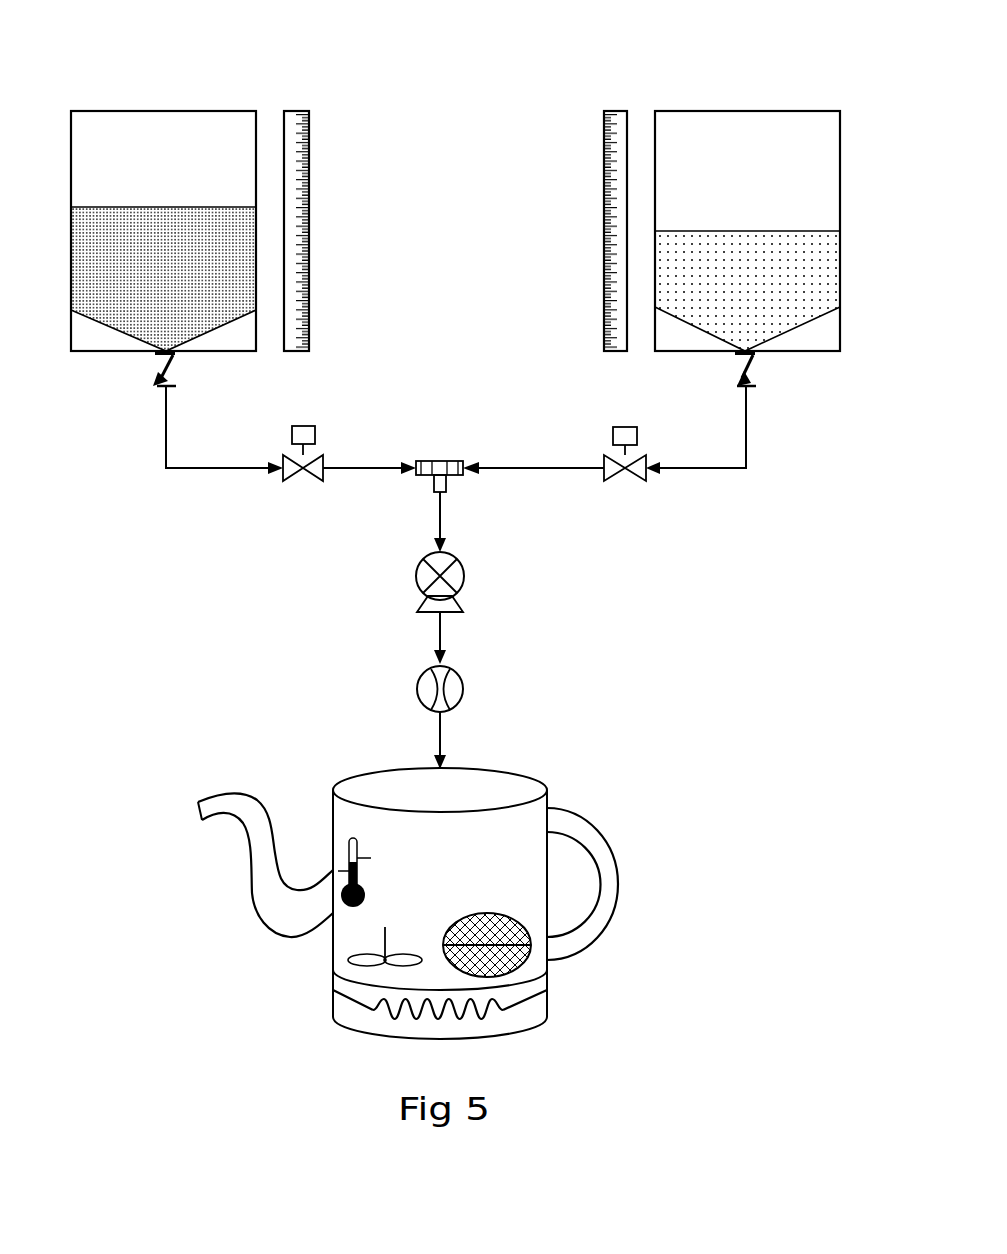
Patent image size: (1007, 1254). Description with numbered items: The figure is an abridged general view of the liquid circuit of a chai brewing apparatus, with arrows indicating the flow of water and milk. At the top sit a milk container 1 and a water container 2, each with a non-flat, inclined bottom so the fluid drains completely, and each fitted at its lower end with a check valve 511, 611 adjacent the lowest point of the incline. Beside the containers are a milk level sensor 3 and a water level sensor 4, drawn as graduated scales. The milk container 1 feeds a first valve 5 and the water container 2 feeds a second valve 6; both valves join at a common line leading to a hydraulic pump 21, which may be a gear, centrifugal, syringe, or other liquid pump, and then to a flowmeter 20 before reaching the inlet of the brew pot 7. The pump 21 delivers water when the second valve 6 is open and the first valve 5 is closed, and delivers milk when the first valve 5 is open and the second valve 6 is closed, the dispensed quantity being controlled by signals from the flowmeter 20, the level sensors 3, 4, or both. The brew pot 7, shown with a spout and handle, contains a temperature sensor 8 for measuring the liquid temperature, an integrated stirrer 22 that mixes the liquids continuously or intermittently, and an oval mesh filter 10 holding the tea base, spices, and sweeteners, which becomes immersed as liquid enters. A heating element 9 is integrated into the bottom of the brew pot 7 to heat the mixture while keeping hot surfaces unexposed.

The milk container 1 is at (163, 110).
The water container 2 is at (745, 110).
The milk level sensor 3 is at (309, 216).
The water level sensor 4 is at (603, 232).
The first valve 5 is at (300, 481).
The second valve 6 is at (645, 480).
The brew pot 7 is at (548, 791).
The temperature sensor 8 is at (348, 845).
The heating element 9 is at (505, 1010).
The mesh filter 10 is at (490, 936).
The flowmeter 20 is at (417, 690).
The hydraulic pump 21 is at (415, 577).
The stirrer 22 is at (366, 965).
The check valve 511 is at (143, 391).
The check valve 611 is at (763, 368).